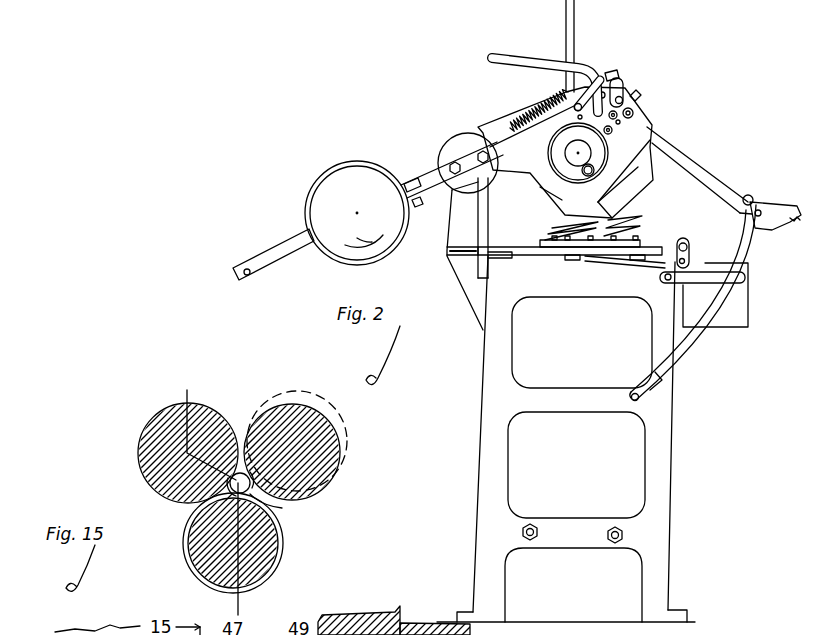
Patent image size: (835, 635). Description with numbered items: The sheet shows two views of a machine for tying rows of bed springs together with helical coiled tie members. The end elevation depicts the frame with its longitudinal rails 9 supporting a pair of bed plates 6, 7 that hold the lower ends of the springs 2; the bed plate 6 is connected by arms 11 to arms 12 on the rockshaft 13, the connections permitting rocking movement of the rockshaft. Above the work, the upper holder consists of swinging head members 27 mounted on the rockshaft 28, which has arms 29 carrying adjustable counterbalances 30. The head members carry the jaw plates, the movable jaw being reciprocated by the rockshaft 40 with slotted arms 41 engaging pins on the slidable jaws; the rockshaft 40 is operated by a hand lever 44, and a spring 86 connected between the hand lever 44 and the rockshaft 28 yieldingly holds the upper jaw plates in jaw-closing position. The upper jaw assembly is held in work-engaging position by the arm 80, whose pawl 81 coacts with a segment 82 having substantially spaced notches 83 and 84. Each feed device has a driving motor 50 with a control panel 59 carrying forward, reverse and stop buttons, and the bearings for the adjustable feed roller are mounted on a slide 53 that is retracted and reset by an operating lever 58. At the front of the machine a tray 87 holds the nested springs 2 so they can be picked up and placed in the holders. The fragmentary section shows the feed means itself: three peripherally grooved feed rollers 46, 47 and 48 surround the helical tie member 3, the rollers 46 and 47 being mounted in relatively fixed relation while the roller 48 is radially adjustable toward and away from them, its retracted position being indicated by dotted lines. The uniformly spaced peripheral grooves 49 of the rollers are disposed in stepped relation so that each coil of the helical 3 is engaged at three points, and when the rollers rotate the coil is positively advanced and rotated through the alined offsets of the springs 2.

In FIG. 2, the spring 2 is at (573, 228).
In FIG. 15, the helical coiled tie member 3 is at (262, 498).
In FIG. 2, the bed plate 6 is at (630, 249).
In FIG. 2, the bed plate 7 is at (575, 255).
In FIG. 2, the longitudinal rail 9 is at (500, 255).
In FIG. 2, the arm 11 is at (652, 263).
In FIG. 2, the arm 12 is at (690, 250).
In FIG. 2, the rockshaft 13 is at (684, 238).
In FIG. 2, the swinging head member 27 is at (645, 128).
In FIG. 2, the rockshaft 28 is at (465, 153).
In FIG. 2, the arm 29 is at (432, 180).
In FIG. 2, the adjustable counterbalance 30 is at (343, 177).
In FIG. 2, the rockshaft 40 is at (580, 104).
In FIG. 2, the arm 41 is at (578, 118).
In FIG. 2, the hand lever 44 is at (575, 30).
In FIG. 15, the feed roller 46 is at (273, 543).
In FIG. 15, the feed roller 47 is at (148, 467).
In FIG. 15, the feed roller 48 is at (335, 447).
In FIG. 15, the peripheral groove 49 is at (283, 558).
In FIG. 2, the driving motor 50 is at (597, 146).
In FIG. 2, the slide 53 is at (618, 88).
In FIG. 2, the operating lever 58 is at (507, 57).
In FIG. 2, the control panel 59 is at (497, 137).
In FIG. 2, the arm 80 is at (698, 163).
In FIG. 2, the pawl 81 is at (760, 224).
In FIG. 2, the segment 82 is at (683, 353).
In FIG. 2, the notch 83 is at (752, 204).
In FIG. 2, the notch 84 is at (697, 342).
In FIG. 2, the spring 86 is at (537, 110).
In FIG. 2, the tray 87 is at (735, 322).